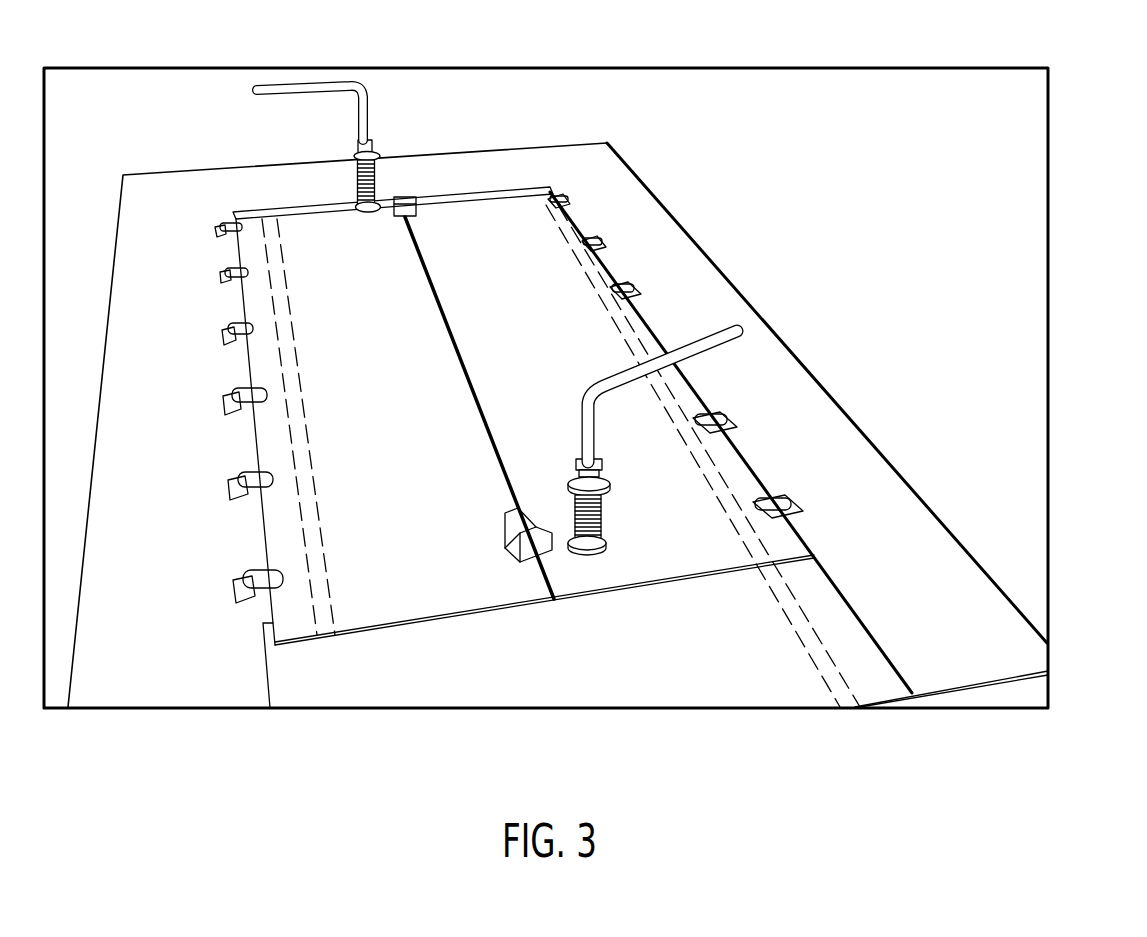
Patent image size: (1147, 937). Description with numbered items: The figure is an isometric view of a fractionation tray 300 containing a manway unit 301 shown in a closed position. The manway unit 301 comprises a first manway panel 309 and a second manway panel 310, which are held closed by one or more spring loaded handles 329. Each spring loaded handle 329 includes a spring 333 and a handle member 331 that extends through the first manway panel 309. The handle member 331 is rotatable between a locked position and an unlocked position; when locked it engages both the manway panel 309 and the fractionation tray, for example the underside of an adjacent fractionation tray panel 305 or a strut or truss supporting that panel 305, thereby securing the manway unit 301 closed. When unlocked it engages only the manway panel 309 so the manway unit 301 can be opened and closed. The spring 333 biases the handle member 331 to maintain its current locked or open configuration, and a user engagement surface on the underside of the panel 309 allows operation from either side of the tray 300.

The fractionation tray 300 is at (558, 397).
The manway unit 301 is at (453, 168).
The adjacent fractionation tray panel 305 is at (538, 666).
The first manway panel 309 is at (708, 438).
The second manway panel 310 is at (364, 379).
The spring loaded handle 329 is at (550, 403).
The handle member 331 is at (890, 432).
The spring 333 is at (555, 458).